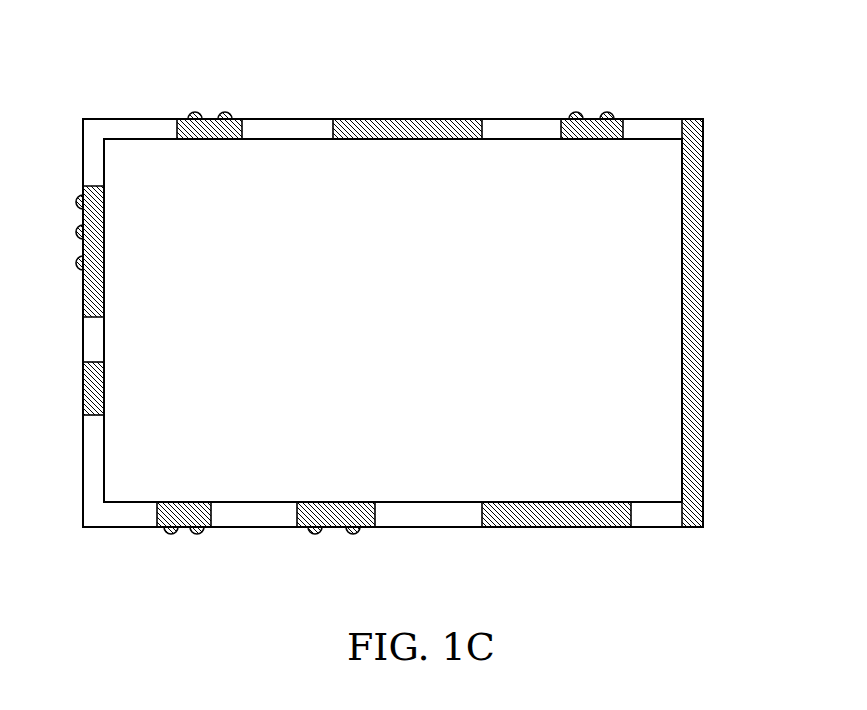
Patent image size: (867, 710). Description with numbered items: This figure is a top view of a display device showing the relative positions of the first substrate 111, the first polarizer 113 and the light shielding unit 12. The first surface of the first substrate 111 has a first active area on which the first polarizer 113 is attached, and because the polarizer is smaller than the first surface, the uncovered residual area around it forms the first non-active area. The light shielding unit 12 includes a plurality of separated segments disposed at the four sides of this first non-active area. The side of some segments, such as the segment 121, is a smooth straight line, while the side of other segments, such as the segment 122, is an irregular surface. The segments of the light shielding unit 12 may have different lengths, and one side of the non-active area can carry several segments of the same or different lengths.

The first substrate 111 is at (83, 160).
The first polarizer 113 is at (393, 320).
The light shielding unit 12 is at (703, 318).
The segment 121 is at (418, 119).
The segment 122 is at (225, 114).